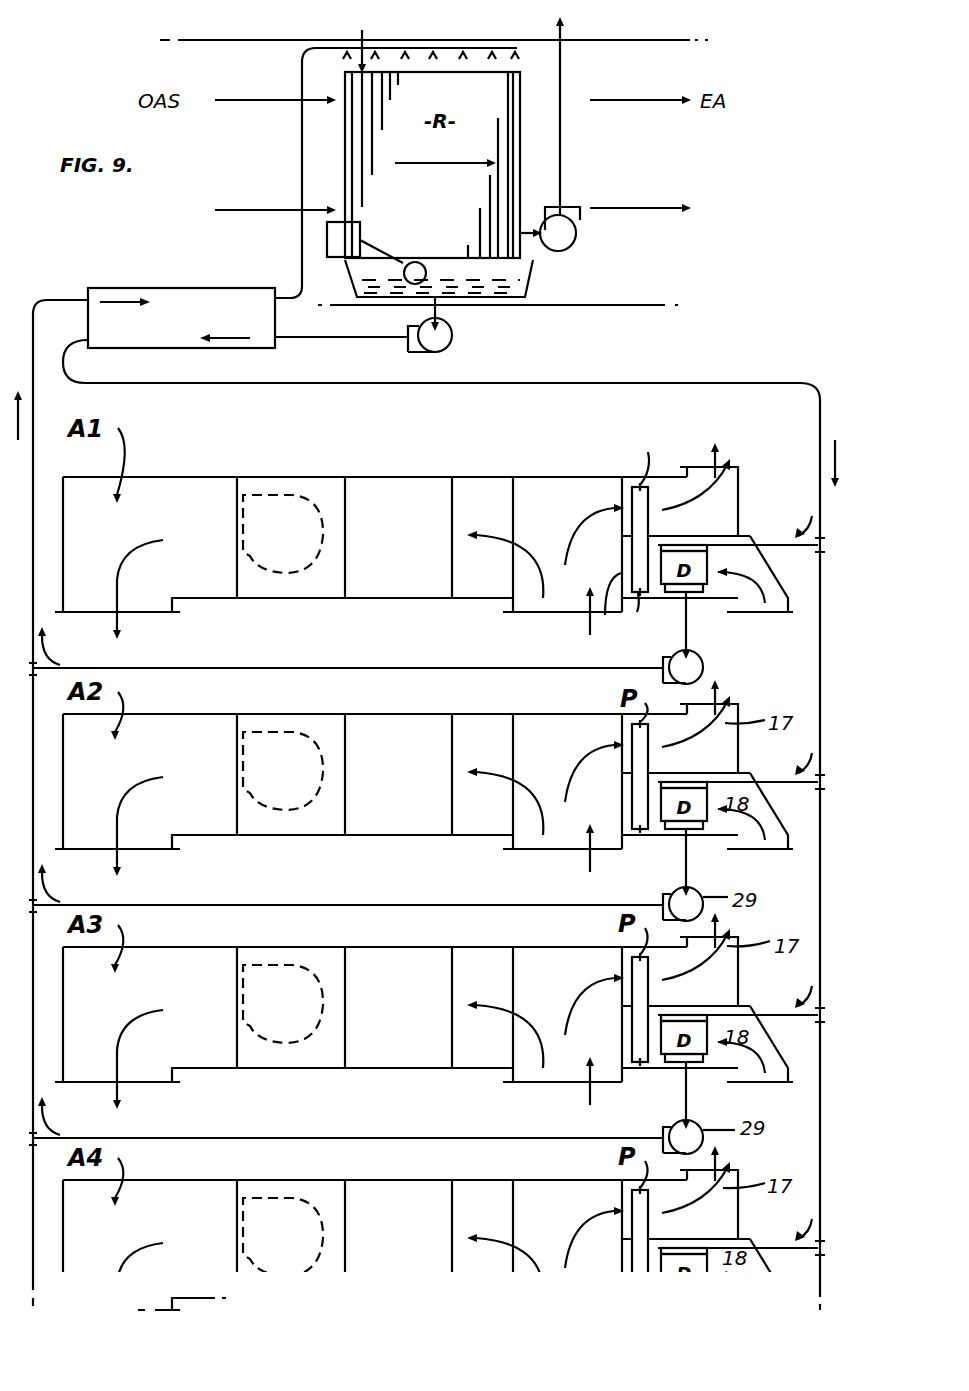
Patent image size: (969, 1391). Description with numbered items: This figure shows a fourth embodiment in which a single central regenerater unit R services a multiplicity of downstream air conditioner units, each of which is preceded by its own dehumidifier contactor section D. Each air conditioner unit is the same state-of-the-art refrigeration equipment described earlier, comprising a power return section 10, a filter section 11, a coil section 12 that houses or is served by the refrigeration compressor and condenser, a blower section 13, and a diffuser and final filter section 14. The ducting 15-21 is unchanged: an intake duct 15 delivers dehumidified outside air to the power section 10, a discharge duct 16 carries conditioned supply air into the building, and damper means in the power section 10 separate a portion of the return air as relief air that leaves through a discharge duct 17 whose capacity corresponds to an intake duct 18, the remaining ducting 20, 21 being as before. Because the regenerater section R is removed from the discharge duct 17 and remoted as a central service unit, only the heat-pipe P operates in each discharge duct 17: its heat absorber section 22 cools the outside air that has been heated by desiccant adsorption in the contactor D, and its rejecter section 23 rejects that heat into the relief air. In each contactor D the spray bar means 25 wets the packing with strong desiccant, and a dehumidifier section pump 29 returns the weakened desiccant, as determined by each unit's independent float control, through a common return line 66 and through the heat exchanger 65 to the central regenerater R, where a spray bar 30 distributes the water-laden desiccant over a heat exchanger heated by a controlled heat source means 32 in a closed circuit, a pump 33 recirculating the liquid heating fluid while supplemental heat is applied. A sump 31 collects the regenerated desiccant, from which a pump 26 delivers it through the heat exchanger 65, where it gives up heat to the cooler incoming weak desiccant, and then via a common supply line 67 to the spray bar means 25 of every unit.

The power return section 10 is at (572, 486).
The filter section 11 is at (482, 486).
The coil section 12 is at (397, 486).
The blower section 13 is at (288, 486).
The diffuser and final filter section 14 is at (195, 486).
The intake duct 15 is at (604, 607).
The discharge duct 16 is at (72, 612).
The discharge duct 17 is at (712, 500).
The intake duct 18 is at (738, 574).
The ducting 20 is at (735, 461).
The ducting 21 is at (773, 613).
The heat absorber section 22 is at (651, 613).
The rejecter section 23 is at (630, 497).
The spray bar 25 is at (677, 545).
The pump 26 is at (455, 337).
The pump 29 is at (703, 660).
The spray bar 30 is at (478, 40).
The sump 31 is at (527, 283).
The controlled heat source means 32 is at (453, 113).
The pump 33 is at (577, 231).
The heat exchanger 65 is at (203, 298).
The common return line 66 is at (67, 300).
The common supply line 67 is at (645, 383).